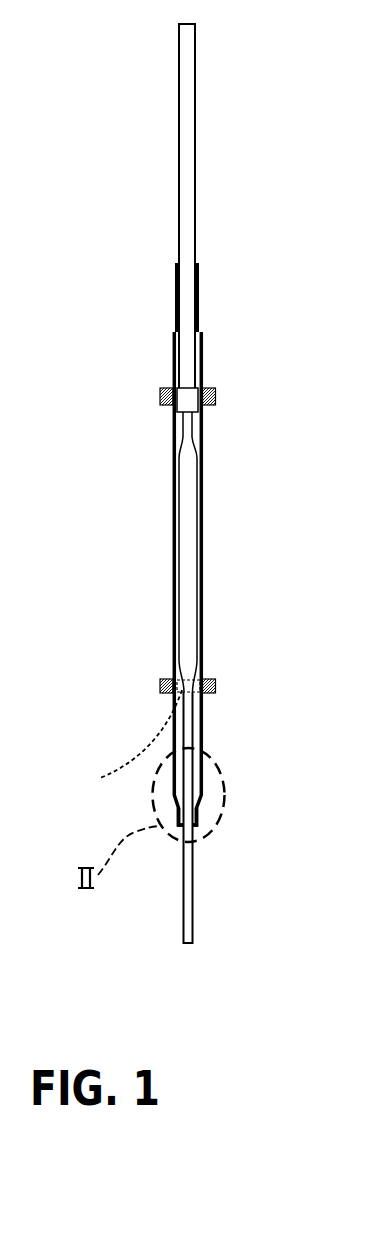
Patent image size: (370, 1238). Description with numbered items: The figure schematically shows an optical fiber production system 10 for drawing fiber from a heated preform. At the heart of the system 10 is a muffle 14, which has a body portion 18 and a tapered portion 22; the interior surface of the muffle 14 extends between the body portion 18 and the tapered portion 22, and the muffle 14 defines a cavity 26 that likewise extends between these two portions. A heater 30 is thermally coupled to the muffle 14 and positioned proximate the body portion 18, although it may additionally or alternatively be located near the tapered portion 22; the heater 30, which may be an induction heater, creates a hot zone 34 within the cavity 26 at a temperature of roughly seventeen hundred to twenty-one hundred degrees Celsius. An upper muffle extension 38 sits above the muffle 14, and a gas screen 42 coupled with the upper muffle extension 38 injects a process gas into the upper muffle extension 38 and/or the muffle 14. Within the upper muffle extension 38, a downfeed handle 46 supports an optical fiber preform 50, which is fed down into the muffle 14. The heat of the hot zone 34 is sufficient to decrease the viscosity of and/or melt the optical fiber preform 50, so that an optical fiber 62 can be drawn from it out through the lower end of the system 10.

The optical fiber production system 10 is at (137, 884).
The muffle 14 is at (212, 714).
The body portion 18 is at (172, 702).
The tapered portion 22 is at (177, 800).
The cavity 26 is at (206, 738).
The heater 30 is at (202, 680).
The hot zone 34 is at (124, 746).
The upper muffle extension 38 is at (203, 471).
The gas screen 42 is at (160, 400).
The downfeed handle 46 is at (192, 375).
The optical fiber preform 50 is at (187, 555).
The optical fiber 62 is at (192, 775).